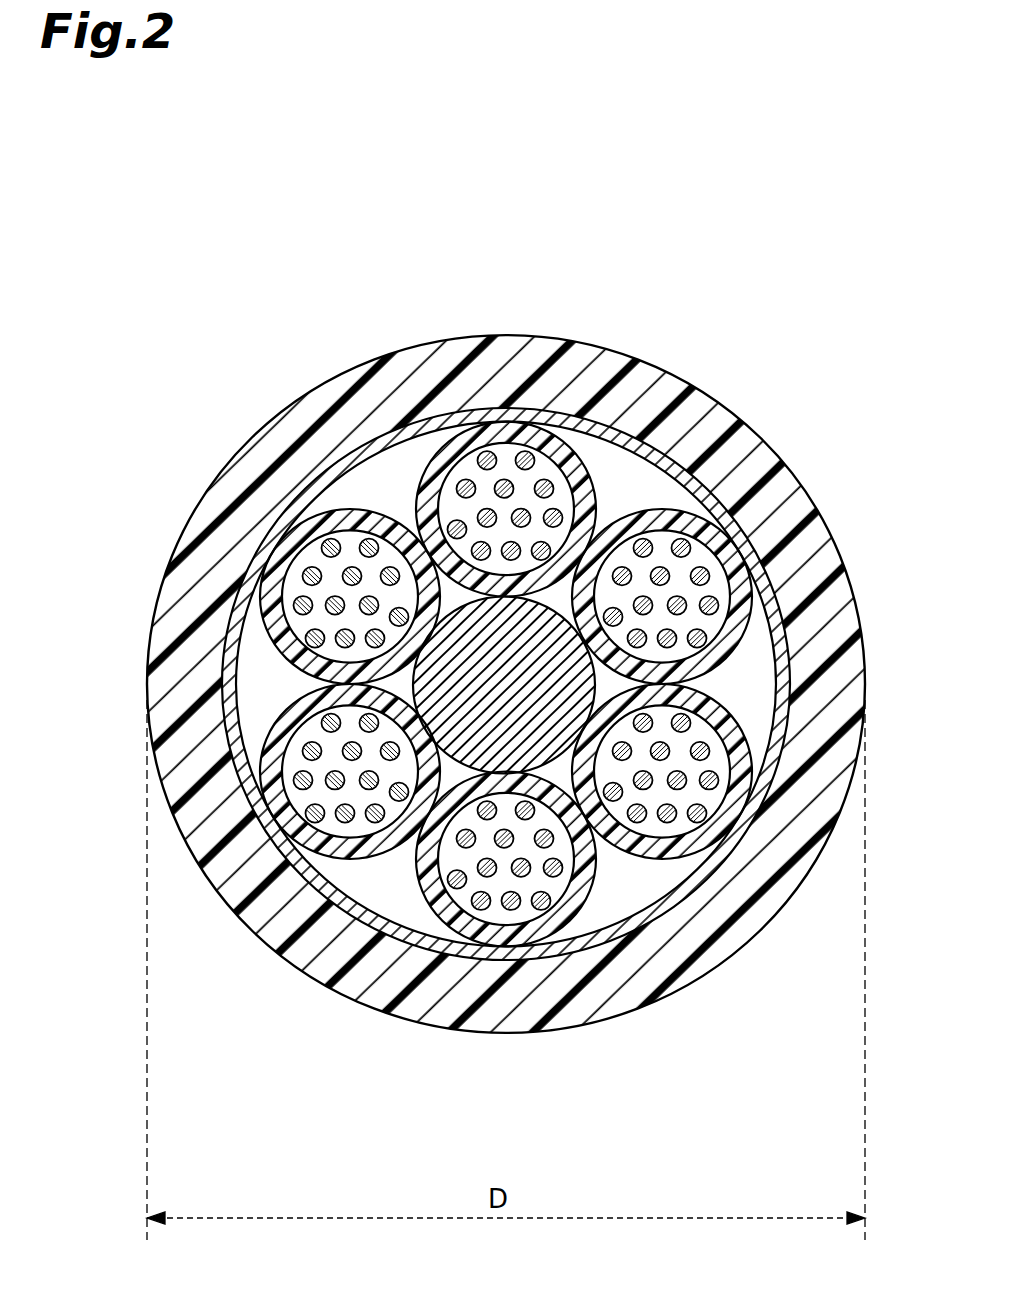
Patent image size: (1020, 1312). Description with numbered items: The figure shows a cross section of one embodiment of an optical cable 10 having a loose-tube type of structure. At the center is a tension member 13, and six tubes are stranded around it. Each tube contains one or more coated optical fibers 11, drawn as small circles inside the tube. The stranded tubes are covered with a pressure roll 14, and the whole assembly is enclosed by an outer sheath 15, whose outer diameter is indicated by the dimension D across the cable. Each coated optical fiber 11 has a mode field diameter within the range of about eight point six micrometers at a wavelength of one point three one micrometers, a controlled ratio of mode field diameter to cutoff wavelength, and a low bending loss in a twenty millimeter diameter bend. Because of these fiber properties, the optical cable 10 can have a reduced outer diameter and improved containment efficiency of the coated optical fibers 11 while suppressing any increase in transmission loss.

The optical cable 10 is at (558, 282).
The coated optical fiber 11 is at (557, 518).
The tension member 13 is at (477, 633).
The pressure roll 14 is at (340, 467).
The outer sheath 15 is at (243, 496).